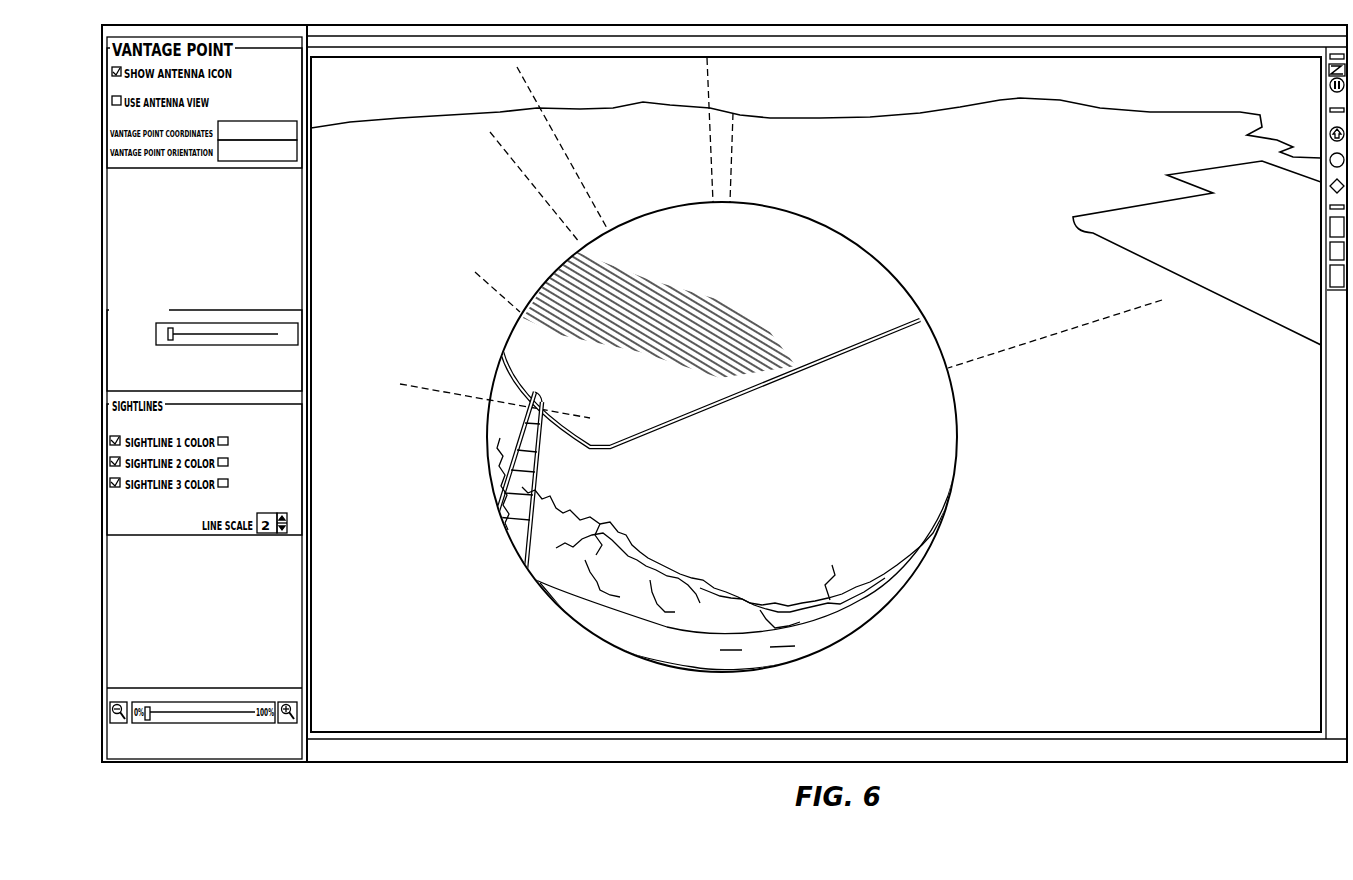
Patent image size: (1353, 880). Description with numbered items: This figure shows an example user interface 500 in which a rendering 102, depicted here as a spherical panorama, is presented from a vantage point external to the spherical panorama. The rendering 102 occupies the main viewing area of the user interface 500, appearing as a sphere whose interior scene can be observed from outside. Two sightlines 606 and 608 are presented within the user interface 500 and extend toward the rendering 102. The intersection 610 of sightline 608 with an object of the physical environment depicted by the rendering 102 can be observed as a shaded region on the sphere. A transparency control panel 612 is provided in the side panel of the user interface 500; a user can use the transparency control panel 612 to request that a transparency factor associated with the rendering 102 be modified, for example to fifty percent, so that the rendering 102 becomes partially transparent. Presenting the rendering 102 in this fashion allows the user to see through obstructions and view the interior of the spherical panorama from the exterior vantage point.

The rendering 102 is at (807, 543).
The user interface 500 is at (612, 765).
The sightline 606 is at (1060, 330).
The sightline 608 is at (428, 387).
The intersection 610 is at (590, 420).
The transparency control panel 612 is at (252, 357).